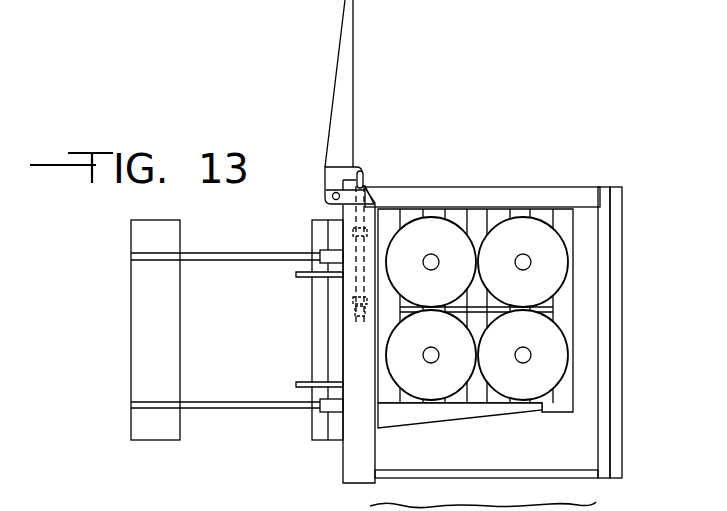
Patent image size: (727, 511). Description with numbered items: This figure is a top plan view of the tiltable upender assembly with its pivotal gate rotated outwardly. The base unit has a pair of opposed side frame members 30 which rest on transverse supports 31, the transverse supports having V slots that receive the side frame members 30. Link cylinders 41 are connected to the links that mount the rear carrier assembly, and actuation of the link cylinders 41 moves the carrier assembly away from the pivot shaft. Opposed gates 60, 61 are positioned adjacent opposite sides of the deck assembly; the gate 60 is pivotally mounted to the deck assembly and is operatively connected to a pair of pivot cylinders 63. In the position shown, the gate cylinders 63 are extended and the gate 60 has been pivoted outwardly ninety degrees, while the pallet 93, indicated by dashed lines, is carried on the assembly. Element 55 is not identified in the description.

The side frame member 30 is at (212, 252).
The transverse support 31 is at (146, 441).
The link cylinder 41 is at (404, 9).
The support member 55 is at (539, 9).
The gate 60 is at (336, 75).
The gate 61 is at (472, 420).
The pivot cylinder 63 is at (352, 282).
The pallet 93 is at (575, 233).